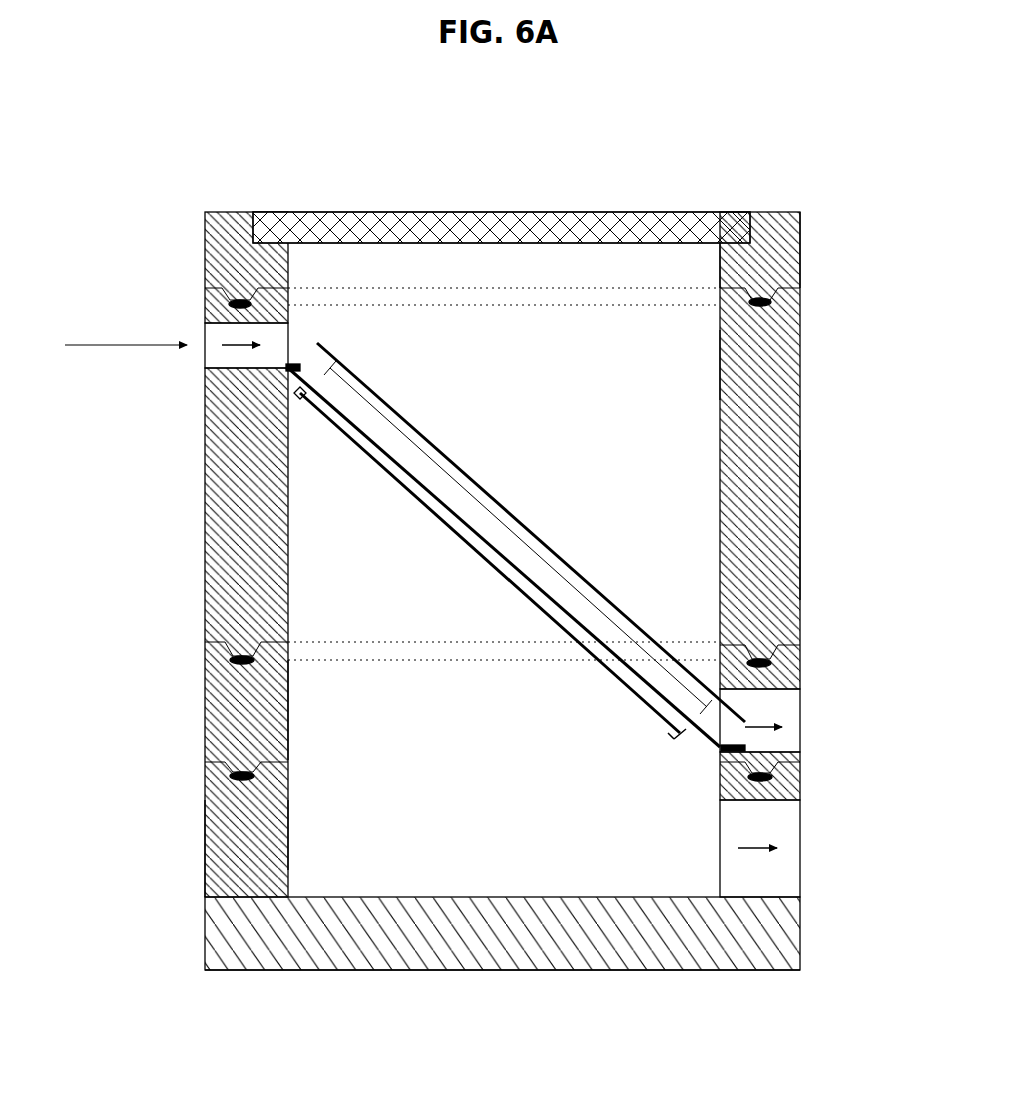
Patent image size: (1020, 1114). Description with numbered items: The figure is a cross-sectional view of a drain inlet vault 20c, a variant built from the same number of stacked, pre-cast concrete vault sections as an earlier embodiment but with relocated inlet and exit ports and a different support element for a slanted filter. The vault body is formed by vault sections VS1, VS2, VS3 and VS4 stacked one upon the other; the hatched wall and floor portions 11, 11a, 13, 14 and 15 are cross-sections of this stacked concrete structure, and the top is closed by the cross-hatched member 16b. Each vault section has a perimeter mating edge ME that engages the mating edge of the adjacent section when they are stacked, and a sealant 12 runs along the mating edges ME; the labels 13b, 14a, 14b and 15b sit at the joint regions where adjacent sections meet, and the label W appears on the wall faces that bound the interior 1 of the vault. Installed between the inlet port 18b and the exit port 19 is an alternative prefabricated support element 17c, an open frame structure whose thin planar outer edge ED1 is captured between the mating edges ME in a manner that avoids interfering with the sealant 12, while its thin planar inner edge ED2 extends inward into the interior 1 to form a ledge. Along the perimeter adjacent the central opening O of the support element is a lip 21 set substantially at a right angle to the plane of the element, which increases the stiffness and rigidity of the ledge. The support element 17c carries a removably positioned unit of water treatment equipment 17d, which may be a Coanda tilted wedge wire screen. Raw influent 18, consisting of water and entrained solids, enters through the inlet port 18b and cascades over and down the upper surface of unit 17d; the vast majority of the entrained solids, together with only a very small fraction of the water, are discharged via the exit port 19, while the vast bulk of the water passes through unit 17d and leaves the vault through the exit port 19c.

The interior 1 is at (543, 373).
The bottom wall member 11 is at (337, 905).
The lower right wall member 11a is at (790, 793).
The sealant 12 is at (240, 655).
The upper left wall member 13 is at (205, 248).
The joint of upper left wall member 13b is at (224, 302).
The outlet passage 14 is at (790, 717).
The joint of right wall member 14a is at (793, 643).
The joint of left wall member 14b is at (238, 775).
The right wall member 15 is at (790, 488).
The joint of right wall member 15b is at (773, 658).
The top plate 16b is at (322, 243).
The prefabricated support element 17c is at (440, 508).
The unit of water treatment equipment 17d is at (455, 462).
The inlet flow 18 is at (108, 345).
The inlet port 18b is at (203, 349).
The exit port 19 is at (800, 725).
The exit port 19c is at (798, 830).
The vault 20c is at (578, 972).
The lip 21 is at (375, 468).
The mating edge ME is at (236, 300).
The wall surface W is at (720, 258).
The vault section VS1 is at (233, 865).
The vault section VS2 is at (795, 253).
The vault section VS3 is at (287, 677).
The vault section VS4 is at (785, 540).
The outer edge ED1 is at (282, 365).
The inner edge ED2 is at (308, 402).
The opening O is at (482, 541).